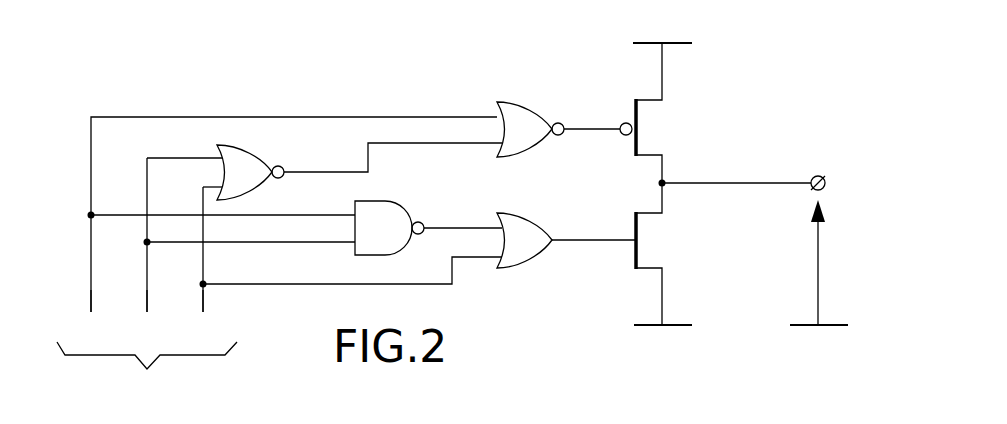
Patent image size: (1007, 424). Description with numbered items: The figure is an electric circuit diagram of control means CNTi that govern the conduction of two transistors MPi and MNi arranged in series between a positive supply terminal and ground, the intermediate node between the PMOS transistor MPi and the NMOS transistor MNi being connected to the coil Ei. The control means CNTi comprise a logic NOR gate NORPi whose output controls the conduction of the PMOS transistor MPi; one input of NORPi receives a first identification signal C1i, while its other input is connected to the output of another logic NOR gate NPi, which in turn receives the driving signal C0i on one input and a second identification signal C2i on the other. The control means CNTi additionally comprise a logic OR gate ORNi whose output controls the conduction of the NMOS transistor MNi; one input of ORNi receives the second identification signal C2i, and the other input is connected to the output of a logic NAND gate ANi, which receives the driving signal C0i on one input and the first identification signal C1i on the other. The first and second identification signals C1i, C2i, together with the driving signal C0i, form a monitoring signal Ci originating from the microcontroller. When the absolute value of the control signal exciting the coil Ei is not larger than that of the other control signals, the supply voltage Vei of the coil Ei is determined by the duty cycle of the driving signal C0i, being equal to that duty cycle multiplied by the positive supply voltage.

The control means CNTi is at (216, 61).
The logic NOR gate NPi is at (266, 150).
The logic NOR gate NORPi is at (537, 112).
The logic NAND gate ANi is at (391, 203).
The logic OR gate ORNi is at (530, 262).
The PMOS transistor MPi is at (648, 155).
The NMOS transistor MNi is at (648, 268).
The coil Ei is at (761, 183).
The supply voltage Vei is at (829, 282).
The first identification signal C1i is at (88, 316).
The driving signal C0i is at (145, 316).
The second identification signal C2i is at (201, 316).
The monitoring signal Ci is at (147, 383).